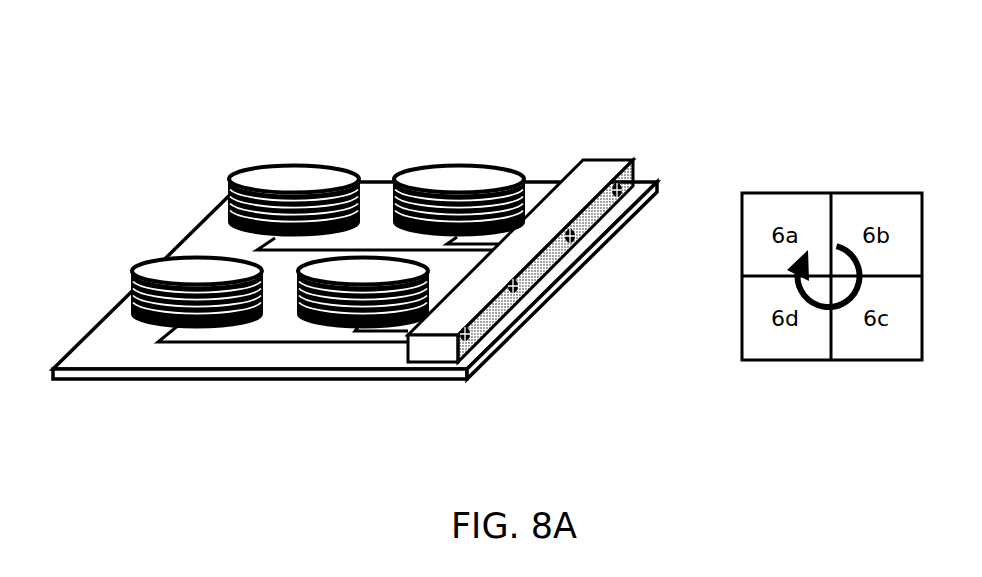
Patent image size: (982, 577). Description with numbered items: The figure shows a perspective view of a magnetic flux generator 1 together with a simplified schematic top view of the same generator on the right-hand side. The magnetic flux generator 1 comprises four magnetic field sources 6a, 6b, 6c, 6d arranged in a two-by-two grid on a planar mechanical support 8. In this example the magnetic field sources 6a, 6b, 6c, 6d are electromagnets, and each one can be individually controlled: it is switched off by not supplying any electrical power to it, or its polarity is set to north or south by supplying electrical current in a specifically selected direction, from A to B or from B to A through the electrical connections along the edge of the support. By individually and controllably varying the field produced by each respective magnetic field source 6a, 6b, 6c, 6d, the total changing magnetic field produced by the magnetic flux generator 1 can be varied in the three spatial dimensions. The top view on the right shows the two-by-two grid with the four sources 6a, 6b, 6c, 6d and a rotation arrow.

The magnetic flux generator 1 is at (355, 224).
The magnetic field source 6a is at (290, 182).
The magnetic field source 6b is at (458, 183).
The magnetic field source 6c is at (364, 280).
The magnetic field source 6d is at (198, 282).
The planar mechanical support 8 is at (106, 341).